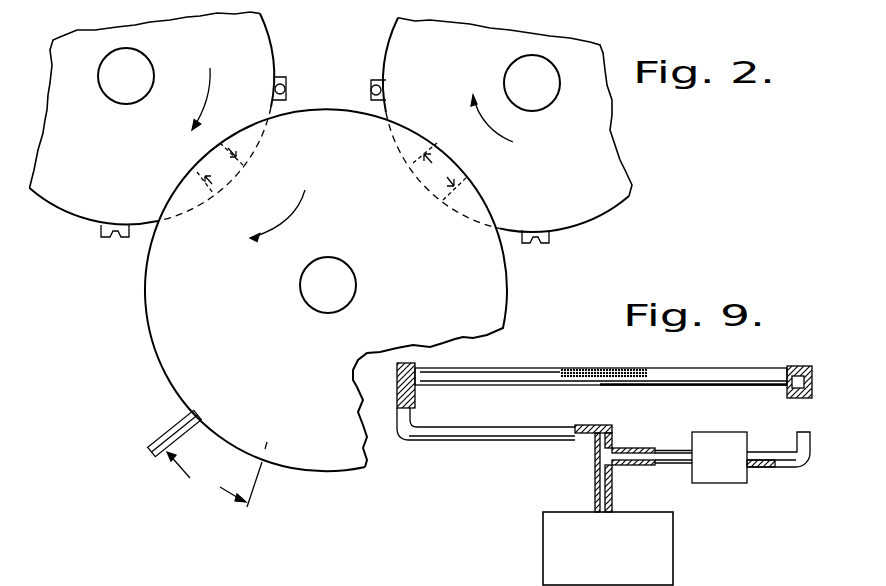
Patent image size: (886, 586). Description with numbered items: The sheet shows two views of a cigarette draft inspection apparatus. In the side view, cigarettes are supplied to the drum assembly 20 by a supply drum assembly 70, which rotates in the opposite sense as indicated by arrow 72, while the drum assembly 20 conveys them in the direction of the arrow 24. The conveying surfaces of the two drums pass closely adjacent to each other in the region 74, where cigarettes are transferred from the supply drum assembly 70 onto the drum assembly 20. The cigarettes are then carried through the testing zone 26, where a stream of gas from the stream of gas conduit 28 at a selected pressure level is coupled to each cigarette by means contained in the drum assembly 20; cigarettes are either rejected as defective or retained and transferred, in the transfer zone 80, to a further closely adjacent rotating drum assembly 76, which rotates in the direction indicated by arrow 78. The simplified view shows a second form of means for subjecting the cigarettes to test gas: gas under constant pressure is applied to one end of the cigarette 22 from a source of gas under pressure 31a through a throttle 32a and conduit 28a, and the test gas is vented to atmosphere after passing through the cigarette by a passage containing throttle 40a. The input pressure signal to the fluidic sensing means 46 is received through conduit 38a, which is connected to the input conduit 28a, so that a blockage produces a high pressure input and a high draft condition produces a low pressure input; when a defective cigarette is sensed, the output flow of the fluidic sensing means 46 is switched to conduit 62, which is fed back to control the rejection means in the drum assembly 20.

In FIG. 2, the drum assembly 20 is at (270, 358).
In FIG. 2, the arrow 24 is at (277, 206).
In FIG. 2, the testing zone 26 is at (217, 474).
In FIG. 2, the stream of gas conduit 28 is at (175, 428).
In FIG. 2, the supply drum assembly 70 is at (100, 183).
In FIG. 2, the arrow 72 is at (204, 100).
In FIG. 2, the region 74 is at (213, 165).
In FIG. 2, the rotating drum assembly 76 is at (572, 190).
In FIG. 2, the arrow 78 is at (500, 128).
In FIG. 2, the transfer zone 80 is at (450, 167).
In FIG. 9, the cigarette 22 is at (515, 367).
In FIG. 9, the conduit 28a is at (470, 433).
In FIG. 9, the source of gas under pressure 31a is at (543, 548).
In FIG. 9, the throttle 32a is at (595, 496).
In FIG. 9, the conduit 38a is at (632, 448).
In FIG. 9, the throttle 40a is at (795, 366).
In FIG. 9, the fluidic sensing means 46 is at (703, 472).
In FIG. 9, the conduit 62 is at (768, 468).